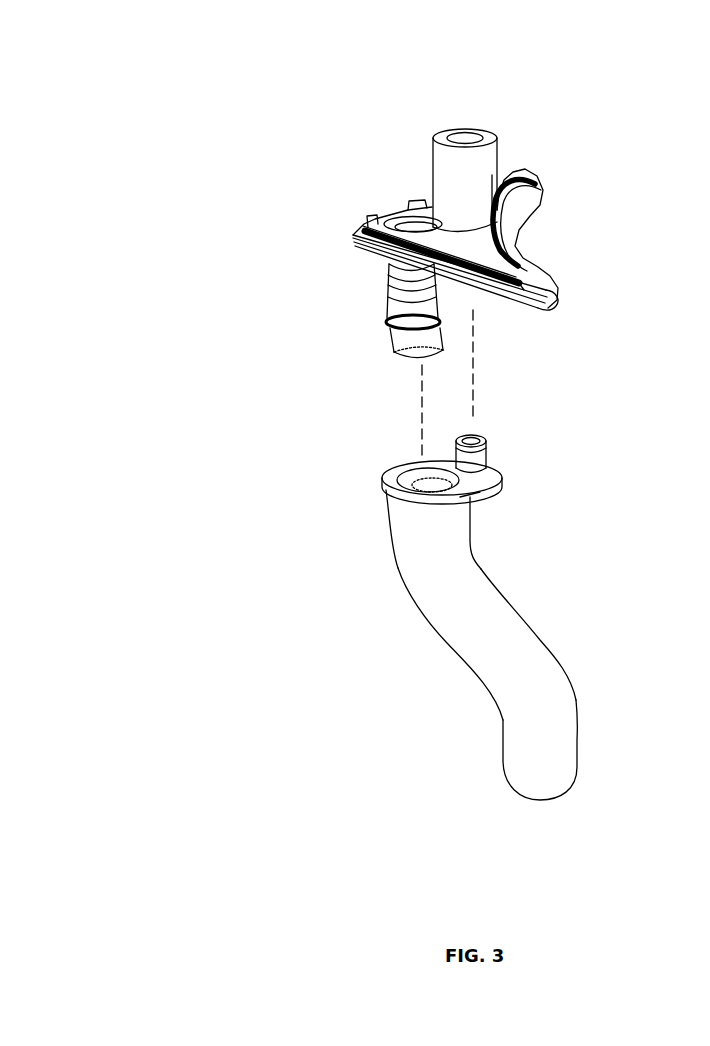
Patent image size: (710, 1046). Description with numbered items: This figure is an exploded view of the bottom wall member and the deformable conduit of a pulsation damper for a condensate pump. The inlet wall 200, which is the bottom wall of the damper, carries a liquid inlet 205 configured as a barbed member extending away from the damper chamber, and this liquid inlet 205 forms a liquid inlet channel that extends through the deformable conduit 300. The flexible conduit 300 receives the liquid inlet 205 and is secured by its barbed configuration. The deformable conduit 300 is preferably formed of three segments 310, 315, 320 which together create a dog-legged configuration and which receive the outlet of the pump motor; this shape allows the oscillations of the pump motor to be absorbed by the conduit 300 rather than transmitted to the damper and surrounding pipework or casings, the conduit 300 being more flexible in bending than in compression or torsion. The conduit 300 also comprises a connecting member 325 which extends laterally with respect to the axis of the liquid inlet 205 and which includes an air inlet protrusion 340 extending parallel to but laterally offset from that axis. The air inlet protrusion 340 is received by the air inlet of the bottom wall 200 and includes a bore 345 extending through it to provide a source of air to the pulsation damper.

The inlet wall 200 is at (355, 249).
The liquid inlet 205 is at (372, 320).
The deformable conduit 300 is at (444, 588).
The segment 310 is at (408, 531).
The segment 315 is at (440, 623).
The segment 320 is at (521, 760).
The connecting member 325 is at (510, 481).
The air inlet protrusion 340 is at (573, 418).
The bore 345 is at (480, 432).